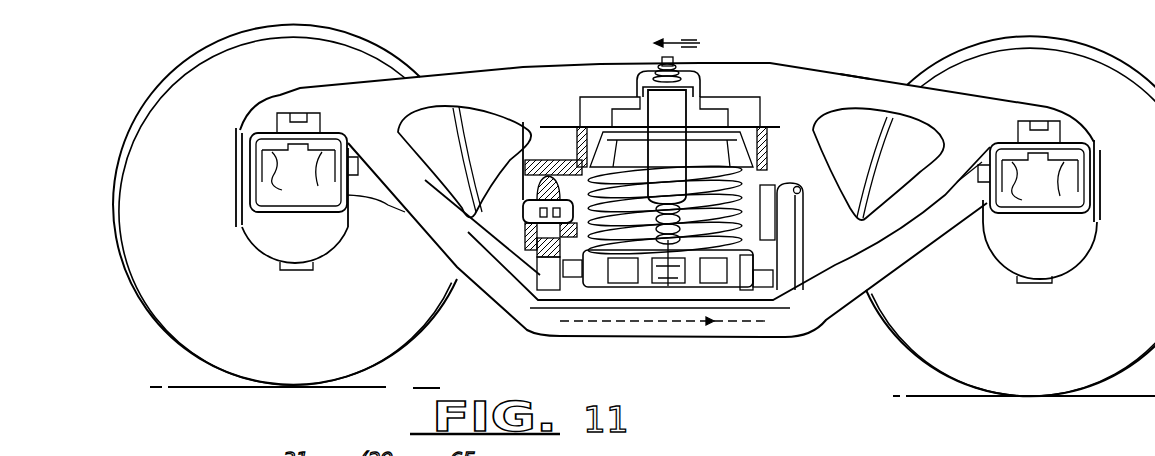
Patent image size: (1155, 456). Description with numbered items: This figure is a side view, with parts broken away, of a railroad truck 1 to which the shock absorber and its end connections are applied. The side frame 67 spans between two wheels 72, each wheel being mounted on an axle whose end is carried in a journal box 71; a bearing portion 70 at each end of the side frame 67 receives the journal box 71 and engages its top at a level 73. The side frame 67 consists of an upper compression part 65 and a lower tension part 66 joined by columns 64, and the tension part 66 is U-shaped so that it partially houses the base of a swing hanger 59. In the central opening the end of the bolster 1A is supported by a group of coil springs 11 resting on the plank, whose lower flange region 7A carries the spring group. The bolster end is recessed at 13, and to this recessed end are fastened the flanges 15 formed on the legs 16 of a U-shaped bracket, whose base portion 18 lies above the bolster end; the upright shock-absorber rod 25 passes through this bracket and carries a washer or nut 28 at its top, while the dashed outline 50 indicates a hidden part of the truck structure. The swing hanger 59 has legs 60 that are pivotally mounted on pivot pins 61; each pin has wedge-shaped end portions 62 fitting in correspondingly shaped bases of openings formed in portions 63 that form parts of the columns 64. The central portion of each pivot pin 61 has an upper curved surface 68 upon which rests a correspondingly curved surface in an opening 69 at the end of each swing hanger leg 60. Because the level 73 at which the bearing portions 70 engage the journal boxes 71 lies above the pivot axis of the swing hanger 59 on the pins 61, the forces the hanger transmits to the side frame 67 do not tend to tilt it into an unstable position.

The railway car truck 1 is at (640, 348).
The bolster end 1A is at (582, 100).
The side frame tension member 7A is at (553, 304).
The coil springs 11 is at (752, 172).
The recessed end 13 is at (707, 103).
The flanges 15 is at (748, 138).
The legs 16 is at (634, 93).
The base portion 18 is at (697, 65).
The vertical rod 25 is at (667, 147).
The washer 28 is at (653, 62).
The brake beam hanger 50 is at (710, 332).
The swing hanger 59 is at (812, 238).
The legs 60 is at (537, 276).
The pivot pins 61 is at (523, 193).
The wedge-shaped end portions 62 is at (520, 218).
The portions 63 is at (540, 188).
The columns 64 is at (530, 120).
The upper compression part 65 is at (778, 68).
The lower tension part 66 is at (772, 338).
The side frame 67 is at (864, 68).
The upper curved surface 68 is at (540, 203).
The opening 69 is at (515, 263).
The bearing portion 70 is at (267, 113).
The journal box 71 is at (335, 236).
The wheel 72 is at (158, 107).
The level 73 is at (670, 174).